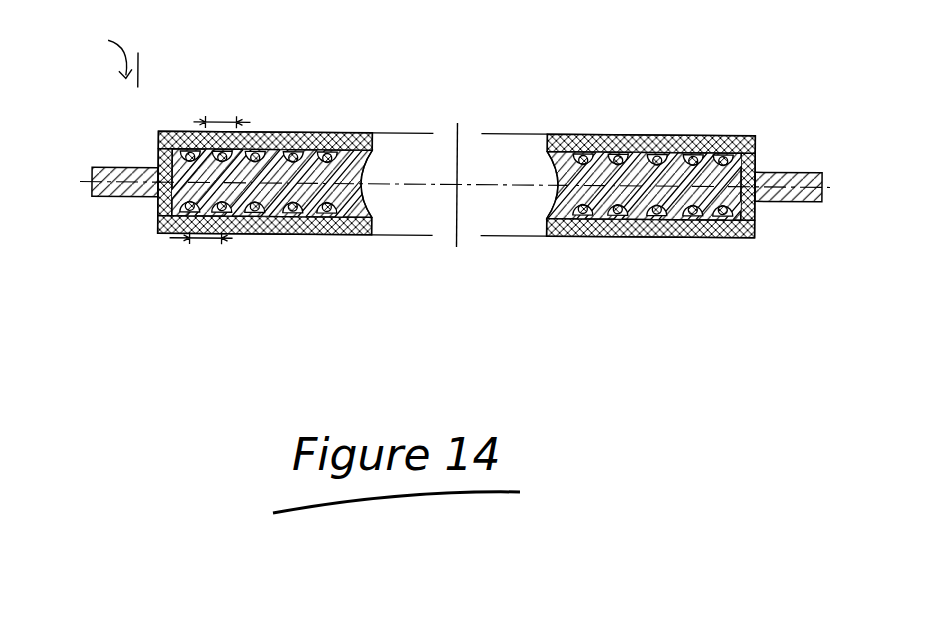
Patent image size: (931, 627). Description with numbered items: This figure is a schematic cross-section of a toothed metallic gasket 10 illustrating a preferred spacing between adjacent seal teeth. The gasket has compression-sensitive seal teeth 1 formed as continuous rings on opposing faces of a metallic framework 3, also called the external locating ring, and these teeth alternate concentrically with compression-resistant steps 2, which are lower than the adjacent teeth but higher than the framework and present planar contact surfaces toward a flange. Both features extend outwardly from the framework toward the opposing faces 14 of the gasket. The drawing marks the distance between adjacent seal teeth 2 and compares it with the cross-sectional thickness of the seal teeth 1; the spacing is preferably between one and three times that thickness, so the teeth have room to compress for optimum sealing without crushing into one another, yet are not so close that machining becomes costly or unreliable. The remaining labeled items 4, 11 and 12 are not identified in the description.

The compression-sensitive seal teeth 1 is at (320, 133).
The compression-resistant steps 2 is at (641, 134).
The metallic framework 3 is at (130, 200).
The second rod 4 is at (713, 237).
The toothed metallic gasket 10 is at (90, 58).
The spacing dimension 11 is at (214, 243).
The break line / intermediate section 12 is at (427, 168).
The opposing faces 14 is at (235, 124).